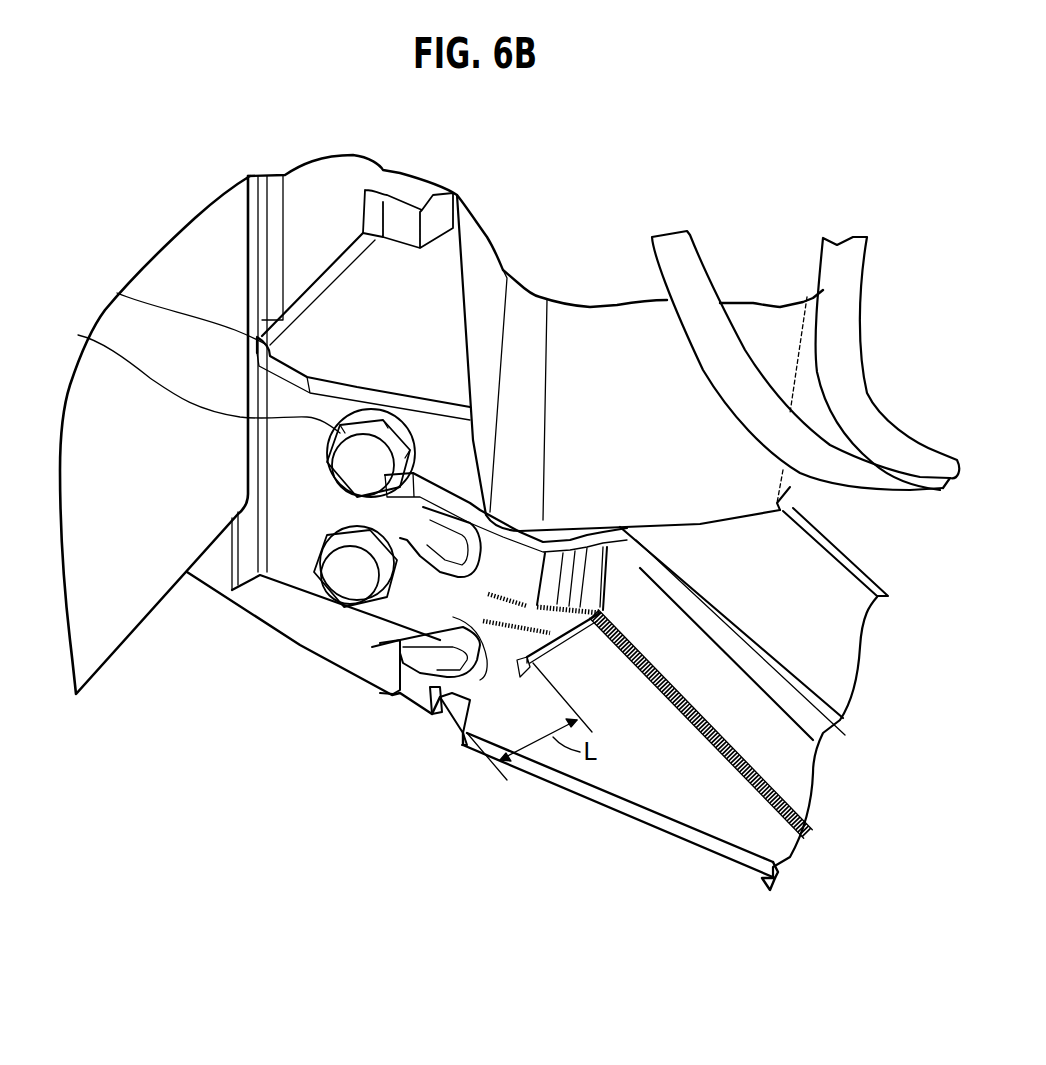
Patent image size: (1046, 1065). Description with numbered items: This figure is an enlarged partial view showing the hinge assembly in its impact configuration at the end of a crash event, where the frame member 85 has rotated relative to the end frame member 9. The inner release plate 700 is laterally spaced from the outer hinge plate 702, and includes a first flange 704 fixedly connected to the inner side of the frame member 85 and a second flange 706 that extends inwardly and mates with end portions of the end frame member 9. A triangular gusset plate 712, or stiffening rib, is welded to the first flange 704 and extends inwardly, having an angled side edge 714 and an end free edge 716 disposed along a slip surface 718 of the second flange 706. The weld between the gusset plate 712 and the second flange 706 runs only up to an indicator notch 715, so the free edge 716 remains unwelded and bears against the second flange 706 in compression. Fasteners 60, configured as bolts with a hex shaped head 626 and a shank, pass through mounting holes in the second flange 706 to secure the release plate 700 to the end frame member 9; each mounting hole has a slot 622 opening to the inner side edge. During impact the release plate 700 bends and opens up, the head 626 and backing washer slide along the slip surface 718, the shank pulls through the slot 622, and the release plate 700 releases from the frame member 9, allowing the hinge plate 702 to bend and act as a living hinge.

The end frame member 9 is at (117, 293).
The head 626 is at (193, 376).
The fasteners 60 is at (342, 580).
The slot 622 is at (383, 625).
The second flange 706 is at (412, 688).
The end free edge 716 is at (445, 687).
The slip surface 718 is at (460, 737).
The indicator notch 715 is at (530, 657).
The hinge plate 702 is at (822, 553).
The frame member 85 is at (817, 622).
The first flange 704 is at (780, 790).
The angled side edge 714 is at (607, 807).
The gusset plate 712 is at (663, 820).
The release plate 700 is at (753, 877).